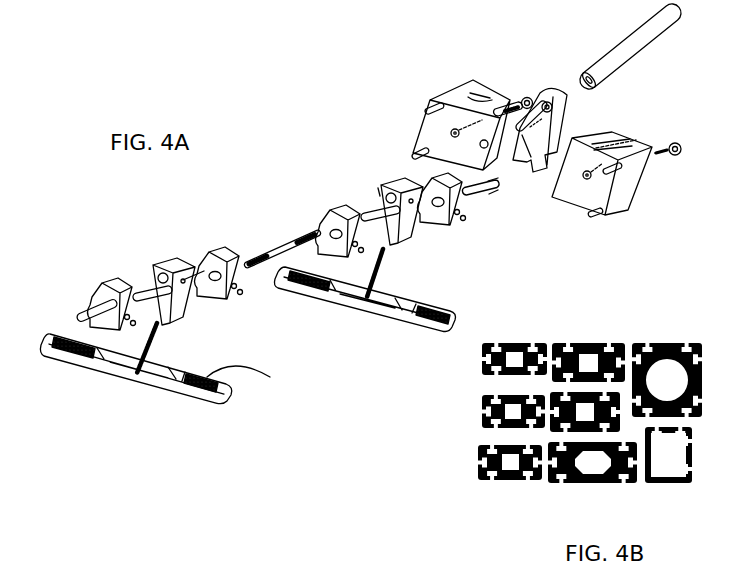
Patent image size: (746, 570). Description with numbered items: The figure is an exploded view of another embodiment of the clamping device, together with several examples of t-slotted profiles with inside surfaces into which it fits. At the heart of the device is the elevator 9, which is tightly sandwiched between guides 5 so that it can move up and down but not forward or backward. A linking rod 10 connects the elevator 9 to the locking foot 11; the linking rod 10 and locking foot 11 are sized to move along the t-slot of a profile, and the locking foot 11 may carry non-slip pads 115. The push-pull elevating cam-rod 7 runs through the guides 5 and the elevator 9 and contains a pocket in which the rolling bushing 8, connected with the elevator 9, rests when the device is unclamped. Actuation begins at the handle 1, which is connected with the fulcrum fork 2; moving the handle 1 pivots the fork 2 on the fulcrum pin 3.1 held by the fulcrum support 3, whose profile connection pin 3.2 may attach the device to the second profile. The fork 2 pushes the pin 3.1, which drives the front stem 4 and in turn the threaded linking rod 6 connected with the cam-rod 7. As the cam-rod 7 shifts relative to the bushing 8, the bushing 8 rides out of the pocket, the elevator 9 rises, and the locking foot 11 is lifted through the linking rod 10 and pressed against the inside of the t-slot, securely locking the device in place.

The handle 1 is at (627, 33).
The fulcrum fork 2 is at (552, 80).
The fulcrum support 3 is at (466, 76).
The fulcrum pin 3.1 is at (501, 106).
The profile connection pin 3.2 is at (427, 104).
The front stem 4 is at (488, 197).
The guides 5 is at (115, 280).
The threaded linking rod 6 is at (232, 296).
The push-pull elevating cam-rod 7 is at (293, 243).
The rolling bushing 8 is at (378, 183).
The elevator 9 is at (172, 249).
The linking rod 10 is at (153, 343).
The locking foot 11 is at (120, 383).
The non-slip pads 115 is at (261, 381).